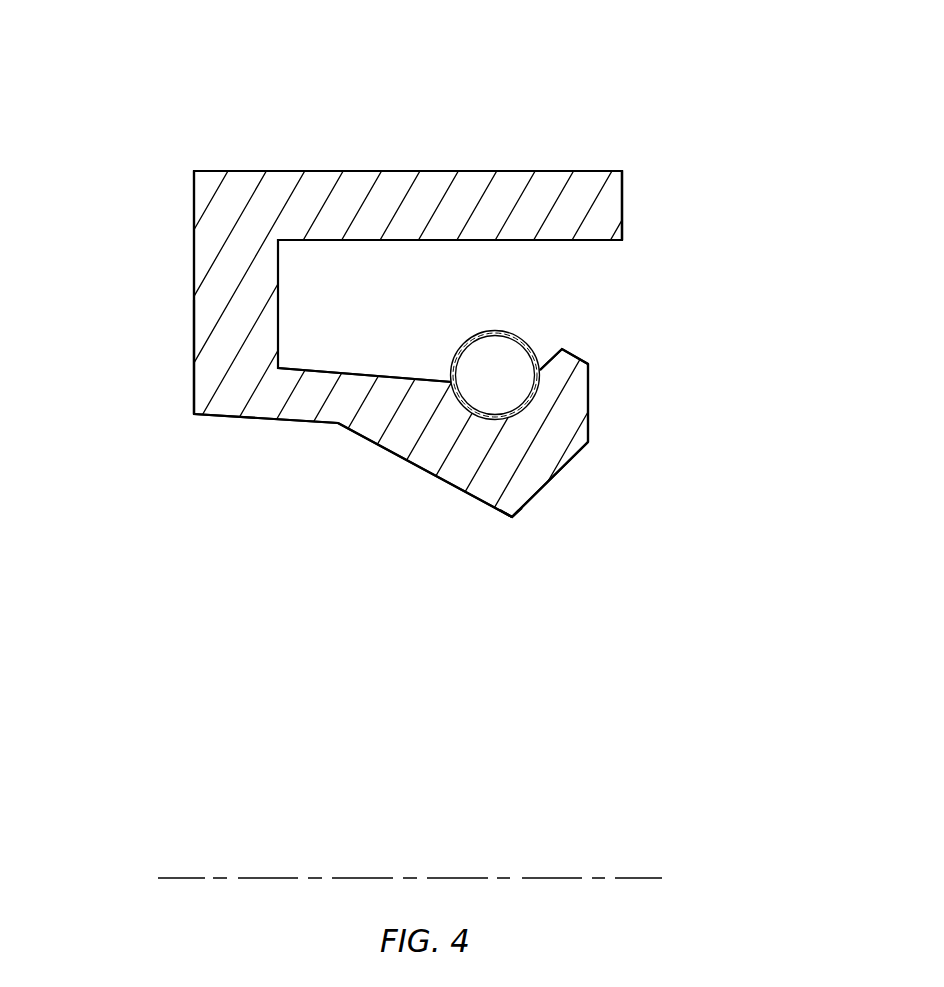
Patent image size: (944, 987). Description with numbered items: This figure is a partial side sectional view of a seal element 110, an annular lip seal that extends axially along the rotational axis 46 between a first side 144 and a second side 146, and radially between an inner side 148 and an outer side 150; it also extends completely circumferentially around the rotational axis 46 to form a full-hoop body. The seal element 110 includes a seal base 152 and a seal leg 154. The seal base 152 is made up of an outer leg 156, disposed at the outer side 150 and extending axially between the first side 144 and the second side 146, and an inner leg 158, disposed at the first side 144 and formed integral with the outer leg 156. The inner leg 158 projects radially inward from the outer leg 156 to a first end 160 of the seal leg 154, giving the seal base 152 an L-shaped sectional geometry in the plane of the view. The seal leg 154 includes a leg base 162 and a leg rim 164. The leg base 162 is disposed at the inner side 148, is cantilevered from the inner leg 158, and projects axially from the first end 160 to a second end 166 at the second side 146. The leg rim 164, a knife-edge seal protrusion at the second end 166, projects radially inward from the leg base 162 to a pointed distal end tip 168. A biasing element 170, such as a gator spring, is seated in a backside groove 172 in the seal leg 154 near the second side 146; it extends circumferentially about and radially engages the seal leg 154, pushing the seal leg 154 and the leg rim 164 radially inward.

The seal element 110 is at (377, 314).
The first side 144 is at (194, 223).
The second side 146 is at (622, 208).
The inner side 148 is at (504, 533).
The outer side 150 is at (500, 170).
The seal base 152 is at (170, 281).
The seal leg 154 is at (371, 492).
The outer leg 156 is at (352, 170).
The inner leg 158 is at (194, 355).
The first end 160 is at (194, 403).
The leg base 162 is at (370, 375).
The leg rim 164 is at (553, 478).
The second end 166 is at (588, 407).
The distal end tip 168 is at (512, 518).
The biasing element 170 is at (505, 332).
The backside groove 172 is at (553, 378).
The rotational axis 46 is at (170, 878).